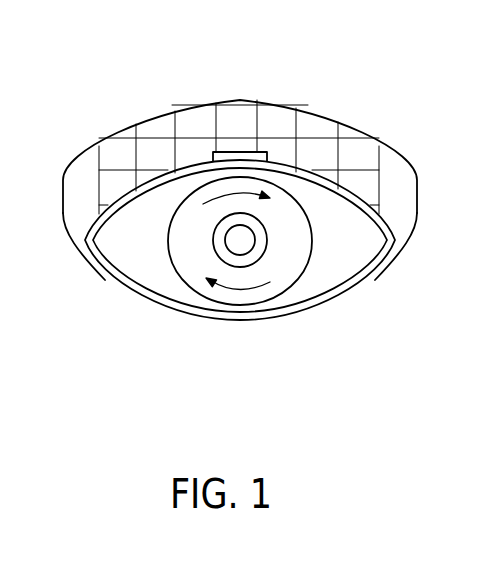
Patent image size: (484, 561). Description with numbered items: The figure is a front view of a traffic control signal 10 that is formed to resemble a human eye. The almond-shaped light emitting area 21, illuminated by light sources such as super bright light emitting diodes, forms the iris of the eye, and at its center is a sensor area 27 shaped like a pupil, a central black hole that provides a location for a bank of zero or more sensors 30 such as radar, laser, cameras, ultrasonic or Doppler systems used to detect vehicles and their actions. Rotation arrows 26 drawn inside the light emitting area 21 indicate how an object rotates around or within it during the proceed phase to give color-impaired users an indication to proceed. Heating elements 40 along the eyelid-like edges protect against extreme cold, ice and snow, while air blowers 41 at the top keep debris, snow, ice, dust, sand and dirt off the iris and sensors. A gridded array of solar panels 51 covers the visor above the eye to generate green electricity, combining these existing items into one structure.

The traffic control signal 10 is at (188, 357).
The light emitting area 21 is at (193, 278).
The rotation arrows 26 is at (236, 292).
The sensor area 27 is at (222, 241).
The sensors 30 is at (198, 259).
The heating elements 40 is at (143, 188).
The air blowers 41 is at (233, 150).
The solar panels 51 is at (315, 127).